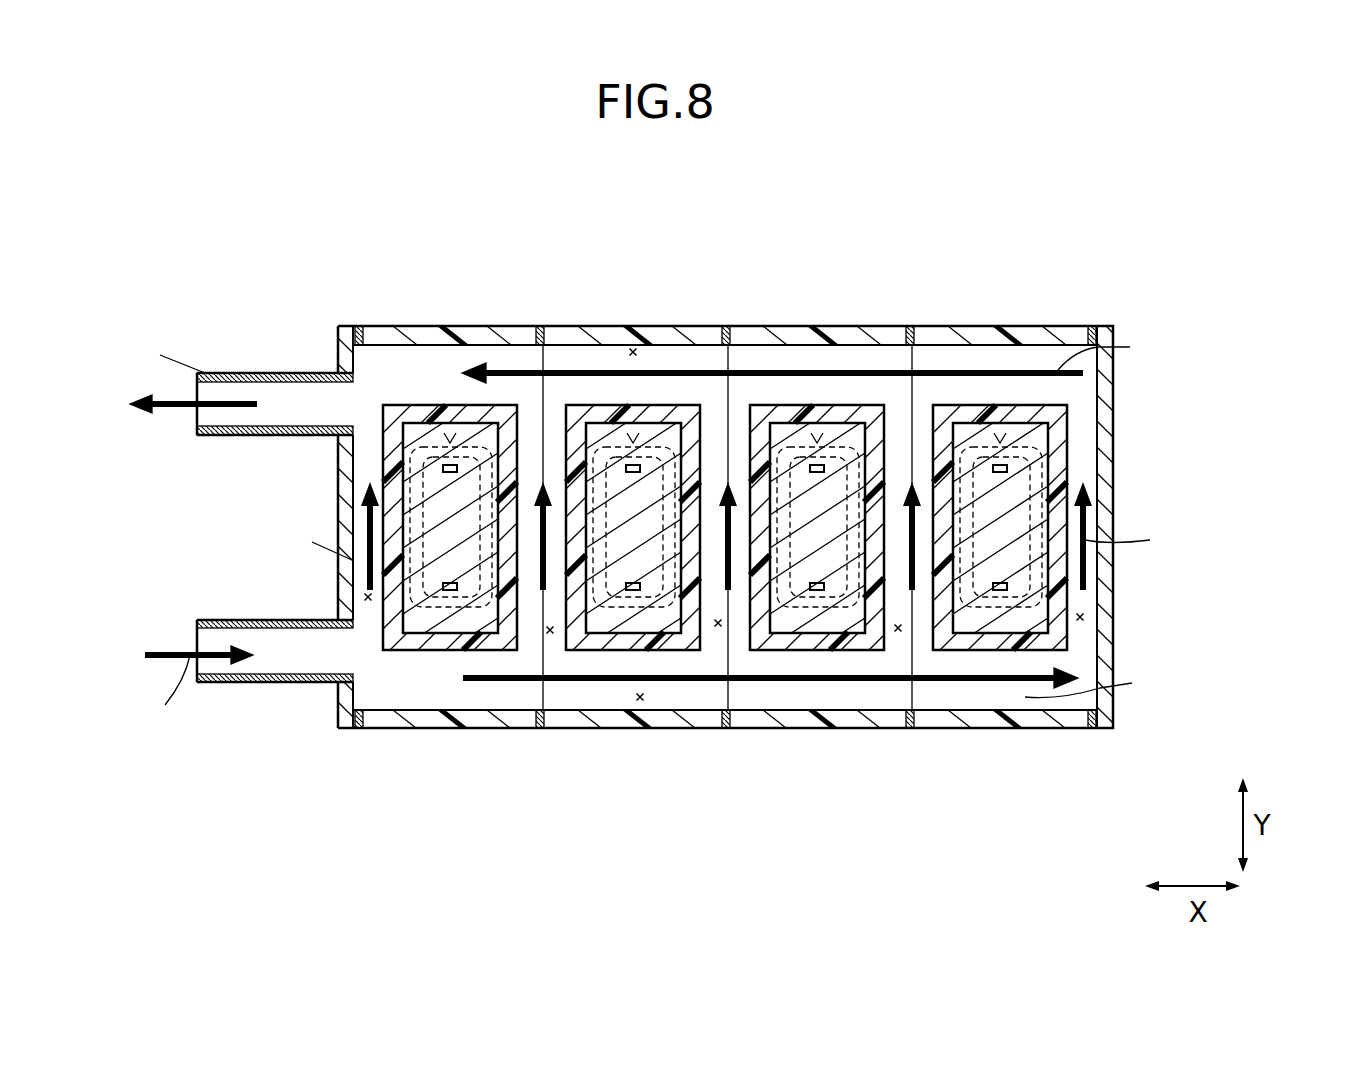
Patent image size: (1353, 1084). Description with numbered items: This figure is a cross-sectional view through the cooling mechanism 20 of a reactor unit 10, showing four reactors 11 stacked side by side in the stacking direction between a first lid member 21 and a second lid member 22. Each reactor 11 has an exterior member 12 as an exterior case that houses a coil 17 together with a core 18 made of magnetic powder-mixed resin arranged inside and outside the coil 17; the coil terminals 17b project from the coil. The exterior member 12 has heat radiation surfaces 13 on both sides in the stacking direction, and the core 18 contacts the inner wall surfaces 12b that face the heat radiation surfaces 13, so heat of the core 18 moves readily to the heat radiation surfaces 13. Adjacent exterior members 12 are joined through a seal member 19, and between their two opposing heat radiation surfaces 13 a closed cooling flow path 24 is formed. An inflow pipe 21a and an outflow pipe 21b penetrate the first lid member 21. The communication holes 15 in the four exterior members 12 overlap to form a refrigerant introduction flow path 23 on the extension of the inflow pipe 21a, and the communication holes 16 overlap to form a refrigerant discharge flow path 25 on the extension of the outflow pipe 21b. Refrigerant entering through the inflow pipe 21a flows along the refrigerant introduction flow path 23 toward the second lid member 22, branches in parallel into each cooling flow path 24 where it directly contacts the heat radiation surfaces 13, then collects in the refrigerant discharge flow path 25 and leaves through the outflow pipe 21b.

The battery pack 10 is at (1053, 221).
The reactor 11 is at (370, 314).
The exterior member 12 is at (558, 728).
The inner wall surface 12b is at (400, 650).
The heat radiation surface 13 is at (566, 423).
The communication hole 15 is at (385, 683).
The communication hole 16 is at (473, 327).
The coil 17 is at (450, 437).
The cell terminal 17b is at (450, 590).
The core 18 is at (437, 447).
The seal member 19 is at (357, 728).
The cooling mechanism 20 is at (311, 322).
The first lid member 21 is at (324, 502).
The inflow pipe 21a is at (248, 682).
The outflow pipe 21b is at (258, 373).
The second lid member 22 is at (1127, 492).
The refrigerant introduction flow path 23 is at (640, 700).
The cooling flow path 24 is at (368, 597).
The refrigerant discharge flow path 25 is at (630, 345).